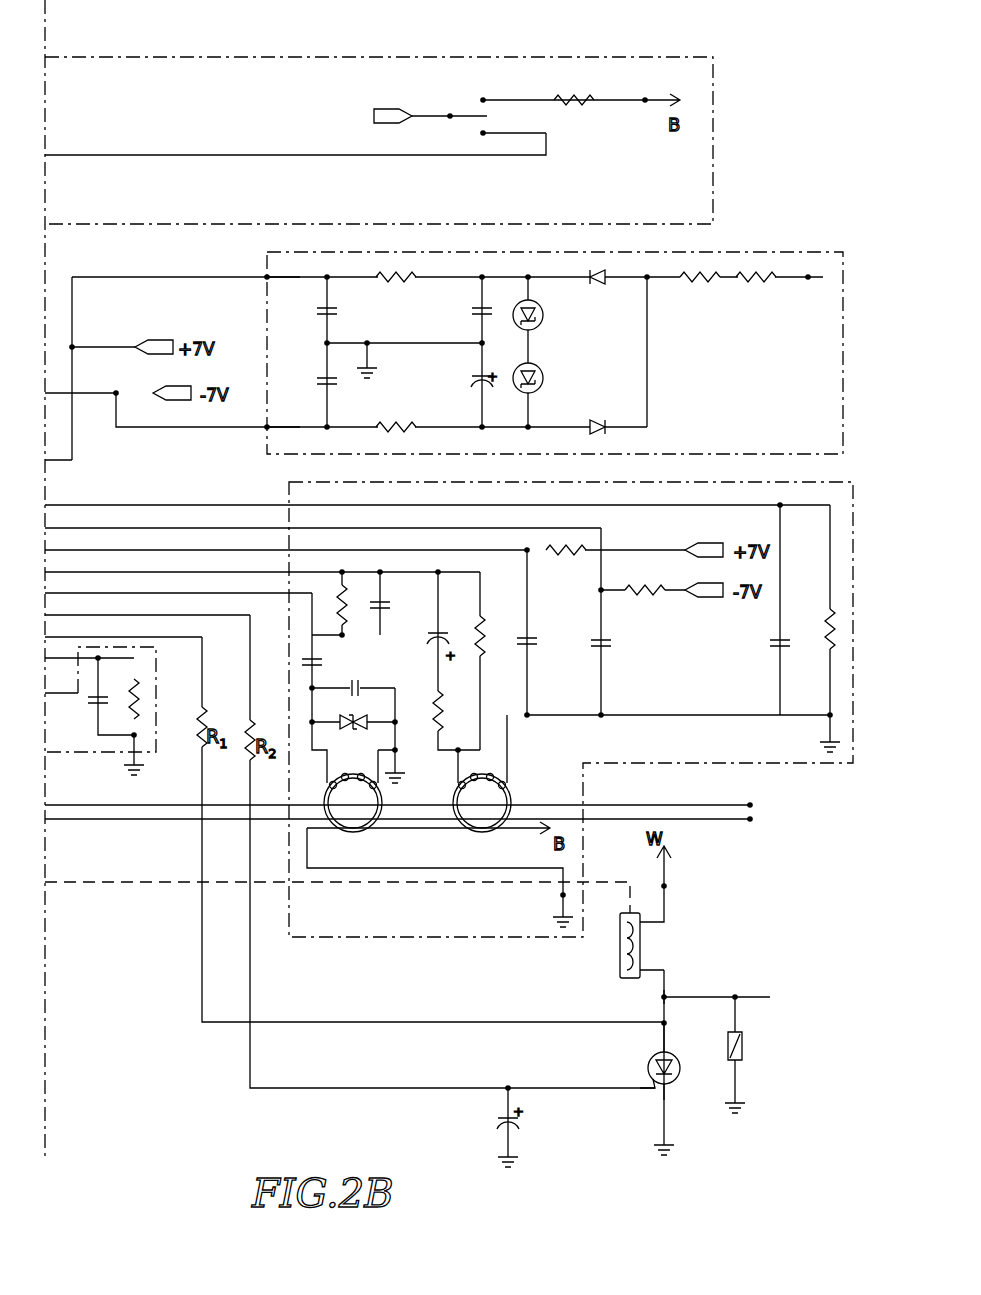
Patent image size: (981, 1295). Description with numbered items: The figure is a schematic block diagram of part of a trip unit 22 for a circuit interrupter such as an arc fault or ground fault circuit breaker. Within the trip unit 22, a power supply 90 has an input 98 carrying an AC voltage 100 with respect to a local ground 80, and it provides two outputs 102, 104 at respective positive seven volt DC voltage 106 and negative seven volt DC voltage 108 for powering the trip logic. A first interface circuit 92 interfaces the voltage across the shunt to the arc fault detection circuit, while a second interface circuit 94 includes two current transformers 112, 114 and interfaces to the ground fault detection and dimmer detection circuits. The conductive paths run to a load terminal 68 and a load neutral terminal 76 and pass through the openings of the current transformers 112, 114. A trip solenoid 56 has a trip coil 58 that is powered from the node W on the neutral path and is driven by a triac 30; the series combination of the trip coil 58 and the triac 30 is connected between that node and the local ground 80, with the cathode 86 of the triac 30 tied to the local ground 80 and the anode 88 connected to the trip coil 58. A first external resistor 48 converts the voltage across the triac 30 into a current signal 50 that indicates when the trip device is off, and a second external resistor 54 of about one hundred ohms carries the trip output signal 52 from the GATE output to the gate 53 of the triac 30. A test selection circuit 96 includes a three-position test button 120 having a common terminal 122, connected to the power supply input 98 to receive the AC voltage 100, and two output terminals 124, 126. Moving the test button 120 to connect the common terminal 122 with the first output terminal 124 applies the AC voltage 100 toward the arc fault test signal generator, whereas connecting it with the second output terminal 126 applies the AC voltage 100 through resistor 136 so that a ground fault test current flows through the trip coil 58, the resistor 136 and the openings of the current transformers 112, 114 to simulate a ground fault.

The trip unit 22 is at (87, 579).
The test selection circuit 96 is at (617, 57).
The common terminal 122 is at (392, 109).
The power supply input 98 is at (372, 117).
The second output terminal 126 is at (483, 100).
The first output terminal 124 is at (483, 133).
The resistor 136 is at (576, 104).
The test button 120 is at (498, 166).
The power supply 90 is at (755, 252).
The power supply output 102 is at (266, 276).
The power supply output 104 is at (266, 428).
The +7 VDC voltage 106 is at (84, 347).
The −7 VDC voltage 108 is at (84, 393).
The local ground 80 is at (374, 374).
The current signal 50 is at (202, 663).
The external resistor 48 is at (202, 717).
The external resistor 54 is at (250, 760).
The trip output signal 52 is at (250, 1066).
The first interface circuit 92 is at (95, 752).
The second interface circuit 94 is at (357, 937).
The current transformer 112 is at (362, 832).
The current transformer 114 is at (508, 792).
The load terminal 68 is at (750, 805).
The load neutral terminal 76 is at (749, 822).
The trip coil 58 is at (642, 947).
The trip solenoid 56 is at (597, 971).
The AC voltage 100 is at (762, 997).
The anode 88 is at (665, 1048).
The triac 30 is at (648, 1062).
The cathode 86 is at (672, 1082).
The gate 53 is at (655, 1082).